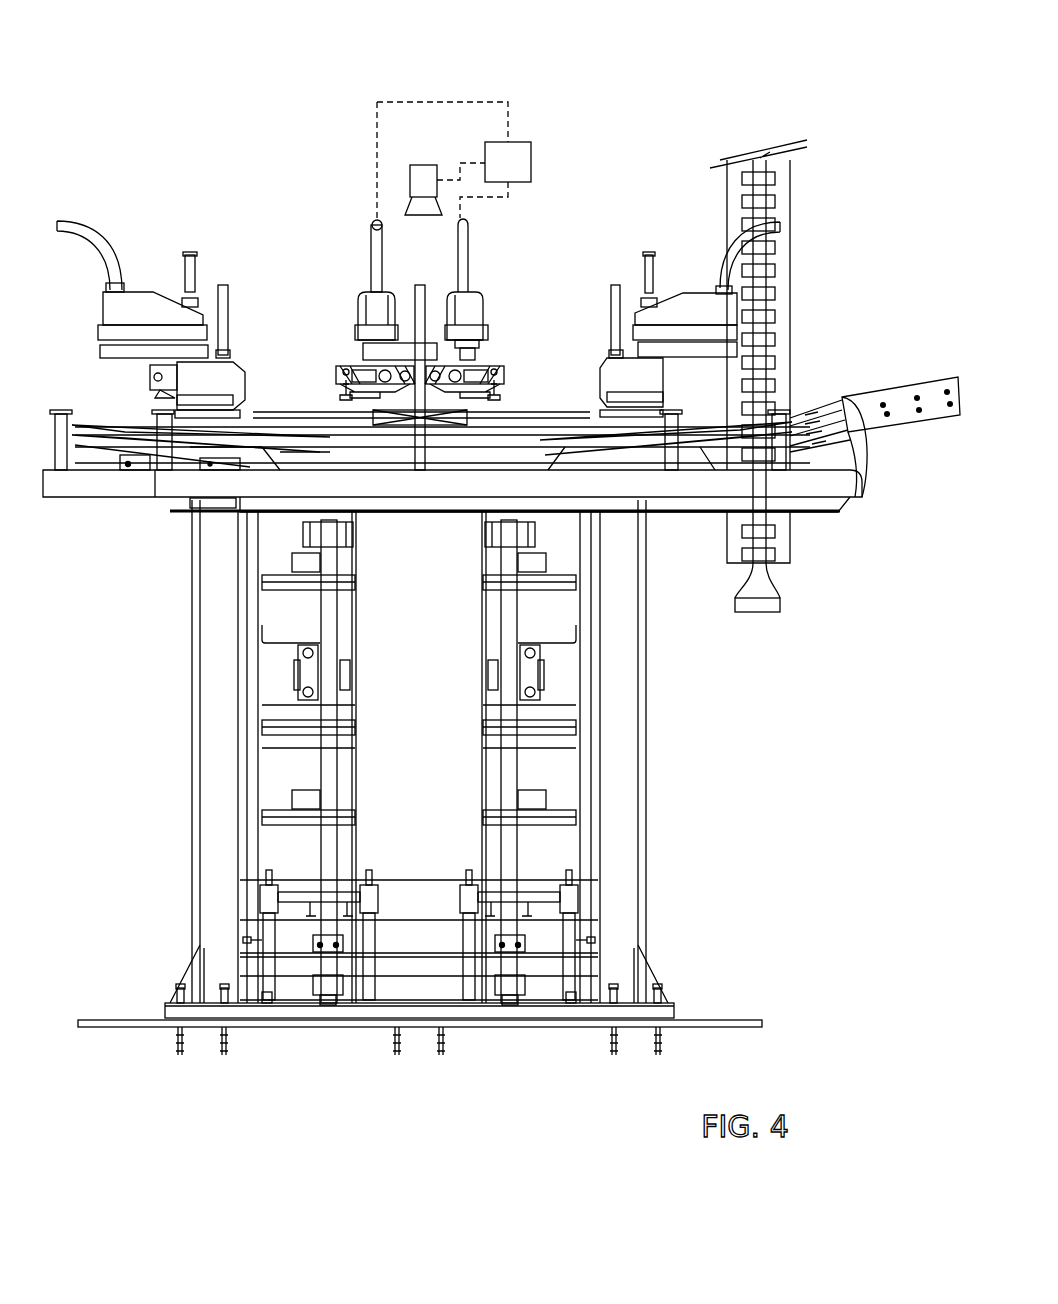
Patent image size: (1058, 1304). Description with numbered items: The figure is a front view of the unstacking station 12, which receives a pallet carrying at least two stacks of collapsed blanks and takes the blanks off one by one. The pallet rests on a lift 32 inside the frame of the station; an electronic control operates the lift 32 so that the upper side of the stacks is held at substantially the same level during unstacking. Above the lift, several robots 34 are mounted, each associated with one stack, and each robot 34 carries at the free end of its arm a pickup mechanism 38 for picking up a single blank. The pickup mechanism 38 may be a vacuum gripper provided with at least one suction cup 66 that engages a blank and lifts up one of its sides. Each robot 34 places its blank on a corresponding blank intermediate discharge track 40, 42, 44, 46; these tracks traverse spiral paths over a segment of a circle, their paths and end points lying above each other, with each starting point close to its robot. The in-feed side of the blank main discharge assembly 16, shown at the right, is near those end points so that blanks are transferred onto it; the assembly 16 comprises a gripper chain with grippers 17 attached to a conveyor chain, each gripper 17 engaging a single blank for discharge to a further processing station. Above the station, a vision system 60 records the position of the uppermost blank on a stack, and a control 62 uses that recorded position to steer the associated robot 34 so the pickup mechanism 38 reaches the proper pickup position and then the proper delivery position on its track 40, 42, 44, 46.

The unstacking station 12 is at (870, 324).
The blank main discharge assembly 16 is at (792, 210).
The grippers 17 is at (778, 264).
The lift 32 is at (330, 625).
The robot 34 is at (150, 305).
The pickup mechanism 38 is at (333, 361).
The blank intermediate discharge track 40 is at (93, 443).
The blank intermediate discharge track 42 is at (84, 415).
The blank intermediate discharge track 44 is at (586, 435).
The blank intermediate discharge track 46 is at (784, 425).
The vision system 60 is at (426, 165).
The control 62 is at (531, 163).
The suction cup 66 is at (342, 395).